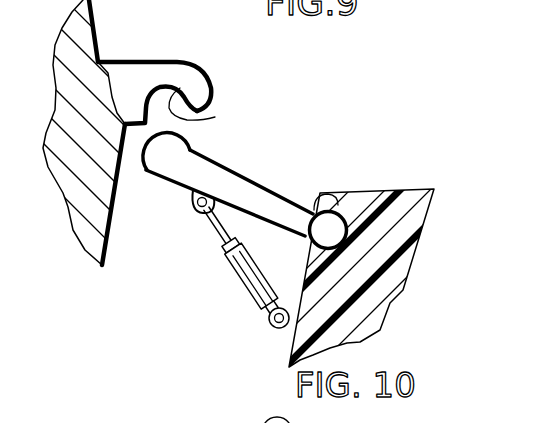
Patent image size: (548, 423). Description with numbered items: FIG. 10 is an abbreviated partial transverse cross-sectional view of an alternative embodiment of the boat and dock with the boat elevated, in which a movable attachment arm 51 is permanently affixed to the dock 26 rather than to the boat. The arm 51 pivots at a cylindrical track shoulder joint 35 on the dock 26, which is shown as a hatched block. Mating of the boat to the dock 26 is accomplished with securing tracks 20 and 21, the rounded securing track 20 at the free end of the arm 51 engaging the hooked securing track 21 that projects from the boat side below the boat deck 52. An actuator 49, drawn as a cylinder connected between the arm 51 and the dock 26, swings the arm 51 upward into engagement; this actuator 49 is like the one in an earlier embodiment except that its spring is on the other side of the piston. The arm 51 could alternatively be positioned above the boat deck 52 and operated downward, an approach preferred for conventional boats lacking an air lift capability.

The boat deck 52 is at (128, 62).
The securing track 21 is at (215, 117).
The securing track 20 is at (192, 145).
The movable attachment arm 51 is at (258, 186).
The cylindrical track shoulder joint 35 is at (336, 197).
The dock 26 is at (395, 189).
The actuator 49 is at (240, 281).